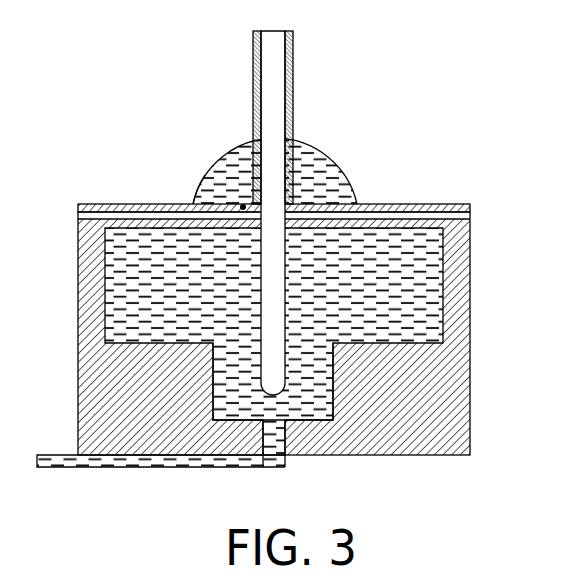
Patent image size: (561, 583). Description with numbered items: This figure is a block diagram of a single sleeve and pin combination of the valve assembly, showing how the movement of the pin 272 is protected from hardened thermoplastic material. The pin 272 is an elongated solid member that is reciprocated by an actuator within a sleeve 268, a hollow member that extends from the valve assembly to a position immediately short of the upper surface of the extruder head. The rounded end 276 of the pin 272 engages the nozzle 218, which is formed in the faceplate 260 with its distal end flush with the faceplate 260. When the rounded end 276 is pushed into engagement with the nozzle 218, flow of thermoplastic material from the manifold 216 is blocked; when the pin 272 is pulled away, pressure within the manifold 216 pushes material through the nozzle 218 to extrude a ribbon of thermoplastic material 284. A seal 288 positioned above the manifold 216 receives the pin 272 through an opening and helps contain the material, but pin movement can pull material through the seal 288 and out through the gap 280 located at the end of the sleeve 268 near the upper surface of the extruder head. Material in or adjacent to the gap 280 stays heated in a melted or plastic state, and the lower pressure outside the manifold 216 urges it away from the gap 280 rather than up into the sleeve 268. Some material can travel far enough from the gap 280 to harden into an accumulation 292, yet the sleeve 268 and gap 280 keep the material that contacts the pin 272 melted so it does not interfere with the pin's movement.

The manifold 216 is at (380, 243).
The nozzle 218 is at (282, 436).
The faceplate 260 is at (440, 456).
The sleeve 268 is at (308, 84).
The pin 272 is at (260, 76).
The rounded end 276 is at (290, 363).
The gap 280 is at (295, 202).
The ribbon of thermoplastic material 284 is at (184, 464).
The seal 288 is at (243, 206).
The accumulation 292 is at (190, 189).